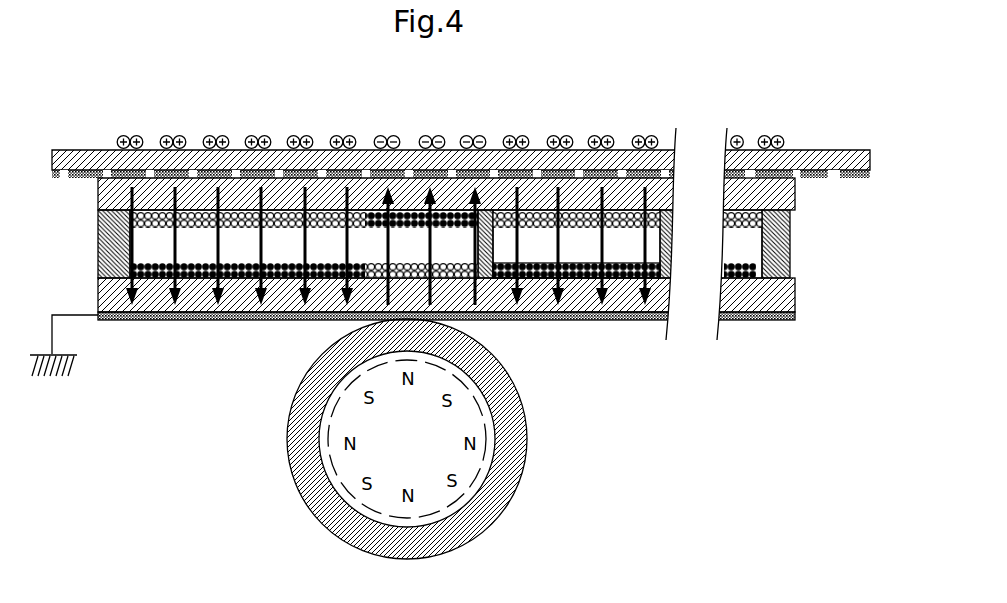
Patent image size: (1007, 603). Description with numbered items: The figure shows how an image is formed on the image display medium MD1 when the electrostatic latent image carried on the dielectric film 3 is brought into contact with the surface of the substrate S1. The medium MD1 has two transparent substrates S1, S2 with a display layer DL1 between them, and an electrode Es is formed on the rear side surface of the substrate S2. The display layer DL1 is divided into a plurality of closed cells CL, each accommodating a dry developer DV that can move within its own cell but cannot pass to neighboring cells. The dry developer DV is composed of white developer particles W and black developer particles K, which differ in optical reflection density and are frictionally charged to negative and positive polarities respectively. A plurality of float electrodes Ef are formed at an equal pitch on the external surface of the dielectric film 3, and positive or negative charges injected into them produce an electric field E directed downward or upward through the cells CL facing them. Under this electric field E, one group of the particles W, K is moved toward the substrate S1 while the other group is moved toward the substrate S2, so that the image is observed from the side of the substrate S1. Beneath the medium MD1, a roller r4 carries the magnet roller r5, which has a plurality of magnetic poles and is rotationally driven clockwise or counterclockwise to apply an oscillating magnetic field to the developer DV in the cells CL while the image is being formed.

The dielectric film 3 is at (68, 162).
The float electrodes Ef is at (230, 172).
The substrate S1 is at (783, 197).
The substrate S2 is at (782, 300).
The electrode Es is at (798, 318).
The display layer DL1 is at (800, 244).
The electric field E is at (207, 242).
The black developer particles K is at (240, 266).
The white developer particles W is at (273, 223).
The cells CL is at (243, 321).
The dry developer DV is at (578, 281).
The image display medium MD1 is at (166, 342).
The magnet roller r4 is at (520, 437).
The magnet roller r5 is at (479, 474).